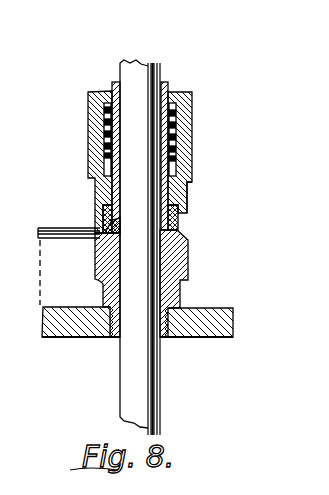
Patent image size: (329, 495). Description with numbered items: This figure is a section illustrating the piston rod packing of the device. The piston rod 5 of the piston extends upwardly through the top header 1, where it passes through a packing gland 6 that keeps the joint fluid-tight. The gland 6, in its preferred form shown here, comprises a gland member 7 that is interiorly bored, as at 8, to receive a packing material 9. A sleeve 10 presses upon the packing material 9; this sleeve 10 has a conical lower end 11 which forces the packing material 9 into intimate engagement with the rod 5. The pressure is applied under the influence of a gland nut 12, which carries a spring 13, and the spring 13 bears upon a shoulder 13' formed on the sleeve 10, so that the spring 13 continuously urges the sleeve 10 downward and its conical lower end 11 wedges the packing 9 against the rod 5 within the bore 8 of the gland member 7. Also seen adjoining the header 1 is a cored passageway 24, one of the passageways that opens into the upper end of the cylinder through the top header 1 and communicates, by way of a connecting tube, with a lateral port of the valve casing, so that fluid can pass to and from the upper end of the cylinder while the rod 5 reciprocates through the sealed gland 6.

The top header 1 is at (212, 313).
The piston rod 5 is at (163, 82).
The packing gland 6 is at (193, 170).
The gland member 7 is at (190, 253).
The bore 8 is at (170, 222).
The packing material 9 is at (107, 223).
The sleeve 10 is at (88, 98).
The conical lower end 11 is at (97, 213).
The gland nut 12 is at (190, 157).
The spring 13 is at (204, 135).
The shoulder 13' is at (71, 136).
The cored passageway 24 is at (42, 236).